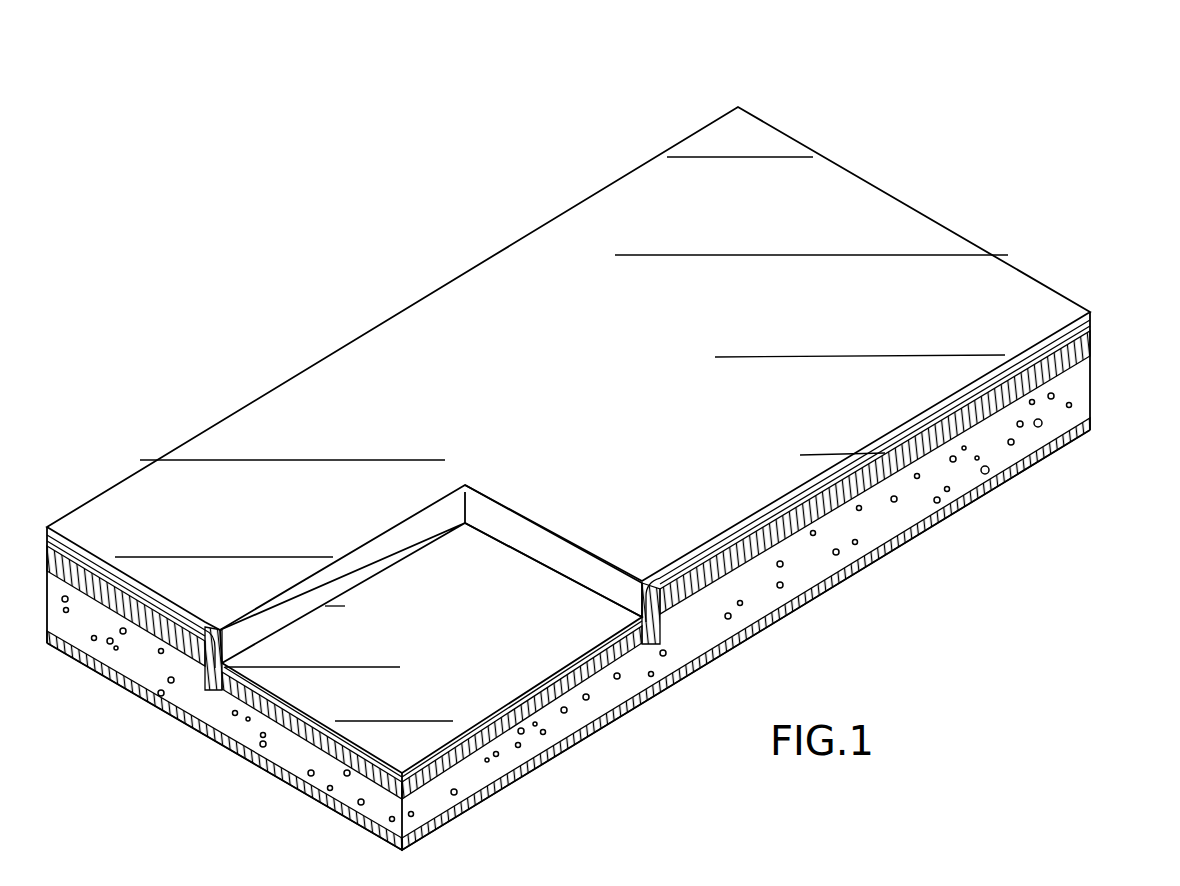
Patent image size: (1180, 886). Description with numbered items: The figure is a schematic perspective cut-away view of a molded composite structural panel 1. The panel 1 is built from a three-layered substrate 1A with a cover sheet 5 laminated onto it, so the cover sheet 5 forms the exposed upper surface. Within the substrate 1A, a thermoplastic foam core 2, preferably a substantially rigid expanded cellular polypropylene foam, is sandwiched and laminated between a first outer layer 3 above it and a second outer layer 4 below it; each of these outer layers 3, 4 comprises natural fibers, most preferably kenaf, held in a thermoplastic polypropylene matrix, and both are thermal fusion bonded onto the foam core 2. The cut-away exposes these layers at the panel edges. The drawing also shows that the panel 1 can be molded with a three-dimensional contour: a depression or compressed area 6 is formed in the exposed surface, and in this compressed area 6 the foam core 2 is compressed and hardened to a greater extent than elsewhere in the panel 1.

The molded composite structural panel 1 is at (988, 114).
The three-layered substrate 1A is at (1093, 318).
The thermoplastic foam core 2 is at (823, 562).
The first outer layer 3 is at (617, 703).
The second outer layer 4 is at (1012, 390).
The cover sheet 5 is at (472, 322).
The depression or compressed area 6 is at (437, 675).